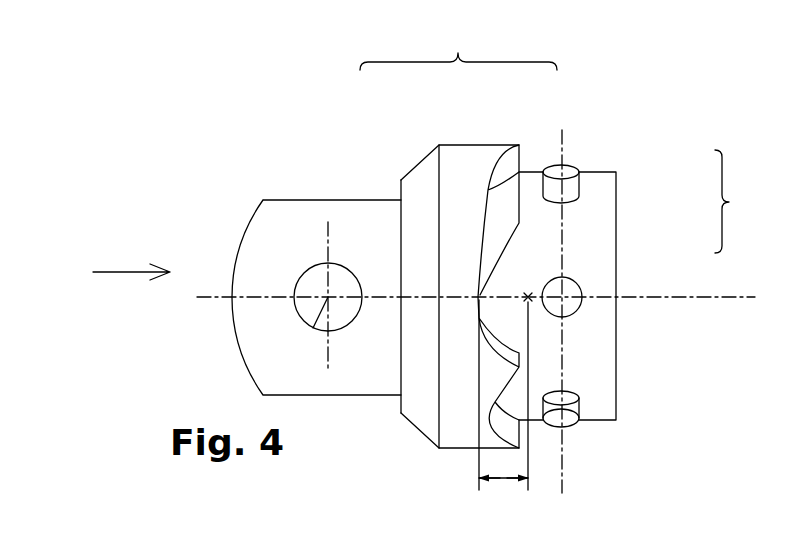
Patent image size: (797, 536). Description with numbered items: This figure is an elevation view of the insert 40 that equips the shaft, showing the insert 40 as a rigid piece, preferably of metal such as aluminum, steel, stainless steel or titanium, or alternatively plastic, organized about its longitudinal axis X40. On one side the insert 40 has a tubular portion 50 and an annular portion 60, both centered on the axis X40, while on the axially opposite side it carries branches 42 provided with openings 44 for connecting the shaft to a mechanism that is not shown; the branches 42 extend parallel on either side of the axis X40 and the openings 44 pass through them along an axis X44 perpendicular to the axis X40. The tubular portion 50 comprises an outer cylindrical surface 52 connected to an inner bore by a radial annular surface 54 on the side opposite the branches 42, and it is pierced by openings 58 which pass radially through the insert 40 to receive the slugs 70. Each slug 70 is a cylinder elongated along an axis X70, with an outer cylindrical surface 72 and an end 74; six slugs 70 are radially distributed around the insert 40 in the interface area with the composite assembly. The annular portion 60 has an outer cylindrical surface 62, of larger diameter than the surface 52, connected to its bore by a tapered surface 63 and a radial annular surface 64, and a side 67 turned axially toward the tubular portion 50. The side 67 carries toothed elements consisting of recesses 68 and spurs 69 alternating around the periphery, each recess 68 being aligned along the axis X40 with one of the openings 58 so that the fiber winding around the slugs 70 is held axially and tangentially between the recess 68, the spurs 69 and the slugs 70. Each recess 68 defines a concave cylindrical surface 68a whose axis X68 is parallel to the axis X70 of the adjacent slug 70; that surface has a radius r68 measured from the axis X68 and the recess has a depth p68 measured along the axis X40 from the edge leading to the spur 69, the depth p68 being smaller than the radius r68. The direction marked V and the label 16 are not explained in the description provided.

The insert 40 is at (220, 167).
The branches 42 is at (250, 221).
The openings 44 is at (303, 263).
The longitudinal axis X40 is at (453, 299).
The axis of the openings X44 is at (313, 328).
The direction of movement V is at (131, 261).
The annular portion 60 is at (458, 48).
The radial annular surface 64 is at (397, 187).
The tapered surface 63 is at (416, 160).
The outer cylindrical surface 62 is at (461, 142).
The recesses 68 is at (482, 247).
The spurs 69 is at (523, 213).
The side 67 is at (542, 152).
The concave cylindrical surface 68a is at (483, 285).
The radius r68 is at (528, 297).
The depth p68 is at (503, 403).
The axis of the cylindrical surface X68 is at (528, 305).
The tubular portion 50 is at (738, 201).
The outer cylindrical surface 52 is at (596, 167).
The openings 58 is at (573, 273).
The radial annular surface 54 is at (620, 258).
The axis of the slug X70 is at (563, 290).
The slugs 70 is at (576, 311).
The outer cylindrical surface 72 is at (580, 325).
The end 74 is at (585, 430).
The sheet element 16 is at (411, 535).